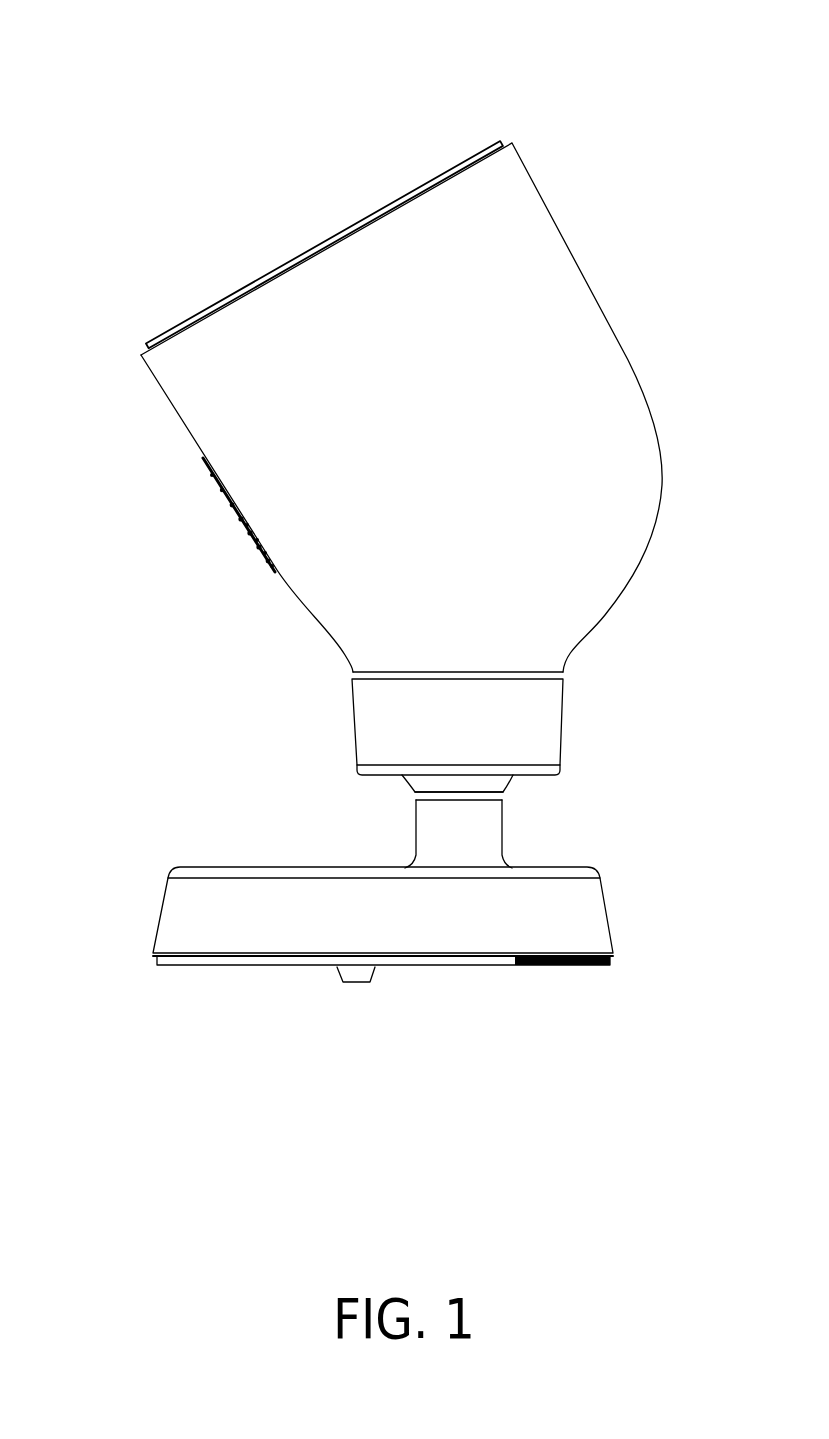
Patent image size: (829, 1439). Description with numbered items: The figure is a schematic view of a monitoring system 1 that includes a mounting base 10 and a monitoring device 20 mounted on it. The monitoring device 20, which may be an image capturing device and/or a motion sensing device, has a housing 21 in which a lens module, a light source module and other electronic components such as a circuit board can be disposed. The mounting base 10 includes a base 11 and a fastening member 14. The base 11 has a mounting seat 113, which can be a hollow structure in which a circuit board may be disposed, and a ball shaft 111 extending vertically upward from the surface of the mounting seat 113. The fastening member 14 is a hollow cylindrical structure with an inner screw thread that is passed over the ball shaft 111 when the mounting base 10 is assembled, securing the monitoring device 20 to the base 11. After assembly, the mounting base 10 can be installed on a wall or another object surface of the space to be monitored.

The monitoring system 1 is at (128, 100).
The mounting base 10 is at (200, 763).
The base 11 is at (165, 875).
The ball shaft 111 is at (507, 777).
The mounting seat 113 is at (593, 905).
The fastening member 14 is at (548, 725).
The monitoring device 20 is at (565, 198).
The housing 21 is at (608, 350).